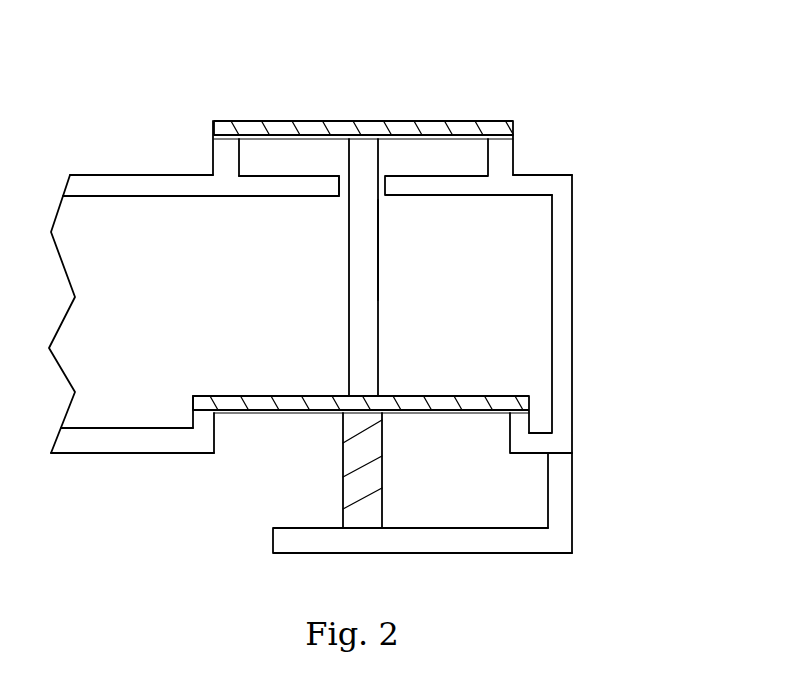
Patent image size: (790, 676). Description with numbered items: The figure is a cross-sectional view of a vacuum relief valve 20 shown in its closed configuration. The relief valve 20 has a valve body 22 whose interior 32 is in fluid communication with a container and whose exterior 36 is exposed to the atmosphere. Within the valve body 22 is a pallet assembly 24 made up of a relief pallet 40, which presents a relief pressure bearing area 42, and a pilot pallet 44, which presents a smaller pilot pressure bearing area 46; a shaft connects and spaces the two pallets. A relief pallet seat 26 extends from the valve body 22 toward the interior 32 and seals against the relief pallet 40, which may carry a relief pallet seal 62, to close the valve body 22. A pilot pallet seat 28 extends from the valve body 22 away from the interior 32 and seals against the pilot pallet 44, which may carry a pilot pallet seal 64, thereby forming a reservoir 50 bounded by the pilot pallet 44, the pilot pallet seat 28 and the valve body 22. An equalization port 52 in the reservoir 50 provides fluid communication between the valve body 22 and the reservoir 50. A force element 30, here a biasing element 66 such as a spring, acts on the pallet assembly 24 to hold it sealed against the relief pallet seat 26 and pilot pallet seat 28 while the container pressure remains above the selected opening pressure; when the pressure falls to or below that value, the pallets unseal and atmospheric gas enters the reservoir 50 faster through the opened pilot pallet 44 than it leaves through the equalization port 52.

The relief valve 20 is at (598, 105).
The valve body 22 is at (145, 185).
The pallet assembly 24 is at (388, 240).
The relief pallet seat 26 is at (519, 437).
The pilot pallet seat 28 is at (233, 150).
The force element 30 is at (370, 288).
The interior 32 is at (541, 277).
The exterior 36 is at (142, 460).
The relief pallet 40 is at (442, 403).
The relief pressure bearing area 42 is at (290, 390).
The pilot pallet 44 is at (375, 121).
The pilot pressure bearing area 46 is at (429, 149).
The reservoir 50 is at (310, 148).
The equalization port 52 is at (346, 192).
The relief pallet seal 62 is at (518, 418).
The pilot pallet seal 64 is at (502, 139).
The biasing element 66 is at (383, 459).